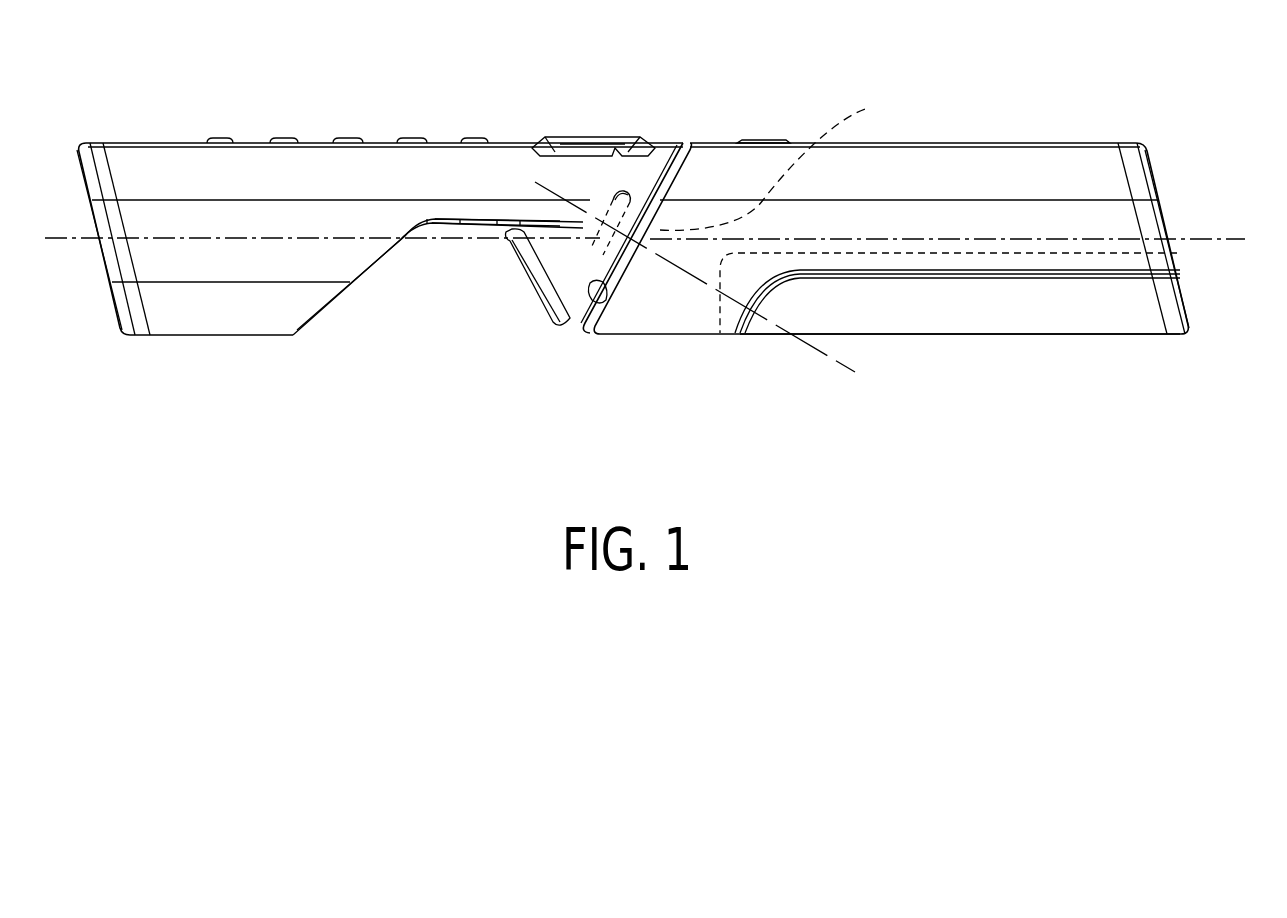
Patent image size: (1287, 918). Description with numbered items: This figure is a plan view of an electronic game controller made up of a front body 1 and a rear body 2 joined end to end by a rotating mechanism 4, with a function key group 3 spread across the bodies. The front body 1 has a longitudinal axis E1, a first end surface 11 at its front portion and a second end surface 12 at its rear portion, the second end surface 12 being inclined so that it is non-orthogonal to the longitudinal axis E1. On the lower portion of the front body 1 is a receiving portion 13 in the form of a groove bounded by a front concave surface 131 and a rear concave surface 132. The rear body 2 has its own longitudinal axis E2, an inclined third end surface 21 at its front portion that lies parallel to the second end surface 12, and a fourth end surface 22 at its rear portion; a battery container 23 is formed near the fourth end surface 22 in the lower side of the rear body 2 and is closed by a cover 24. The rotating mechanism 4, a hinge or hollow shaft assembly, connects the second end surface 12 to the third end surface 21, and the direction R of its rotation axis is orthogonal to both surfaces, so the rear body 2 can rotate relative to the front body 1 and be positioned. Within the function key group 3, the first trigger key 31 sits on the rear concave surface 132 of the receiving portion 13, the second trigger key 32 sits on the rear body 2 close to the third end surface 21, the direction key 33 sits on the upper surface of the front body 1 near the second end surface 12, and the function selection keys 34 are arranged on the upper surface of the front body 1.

The front body 1 is at (117, 141).
The rear body 2 is at (988, 141).
The function key group 3 is at (500, 84).
The rotating mechanism 4 is at (775, 158).
The first end surface 11 is at (108, 279).
The second end surface 12 is at (625, 197).
The receiving portion 13 is at (443, 274).
The third end surface 21 is at (593, 262).
The fourth end surface 22 is at (1157, 182).
The battery container 23 is at (1000, 262).
The cover 24 is at (1107, 337).
The first trigger key 31 is at (523, 277).
The second trigger key 32 is at (765, 112).
The direction key 33 is at (602, 139).
The function selection keys 34 is at (475, 132).
The front concave surface 131 is at (348, 285).
The rear concave surface 132 is at (549, 324).
The direction of the rotation axis R is at (708, 287).
The longitudinal axis of the front body E1 is at (309, 239).
The longitudinal axis of the rear body E2 is at (966, 241).